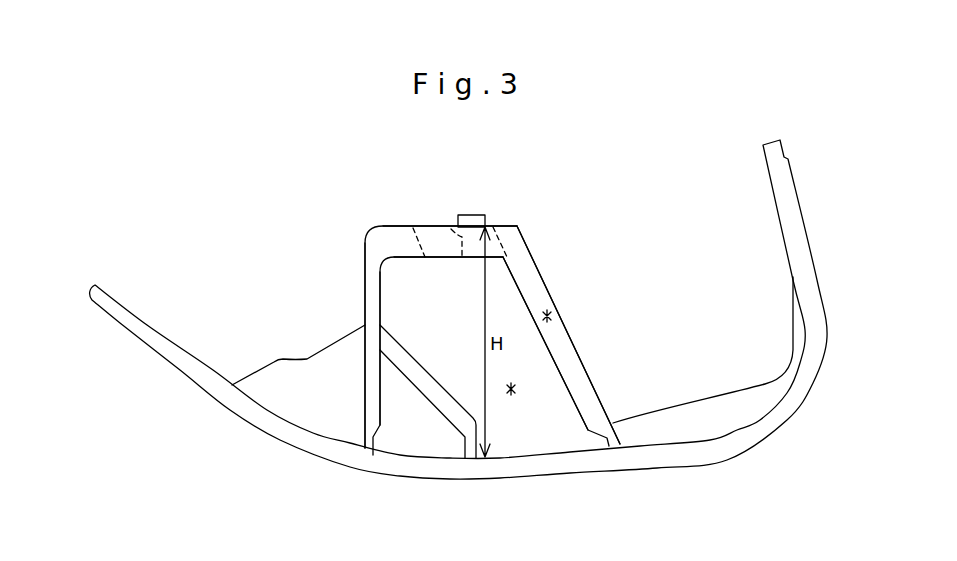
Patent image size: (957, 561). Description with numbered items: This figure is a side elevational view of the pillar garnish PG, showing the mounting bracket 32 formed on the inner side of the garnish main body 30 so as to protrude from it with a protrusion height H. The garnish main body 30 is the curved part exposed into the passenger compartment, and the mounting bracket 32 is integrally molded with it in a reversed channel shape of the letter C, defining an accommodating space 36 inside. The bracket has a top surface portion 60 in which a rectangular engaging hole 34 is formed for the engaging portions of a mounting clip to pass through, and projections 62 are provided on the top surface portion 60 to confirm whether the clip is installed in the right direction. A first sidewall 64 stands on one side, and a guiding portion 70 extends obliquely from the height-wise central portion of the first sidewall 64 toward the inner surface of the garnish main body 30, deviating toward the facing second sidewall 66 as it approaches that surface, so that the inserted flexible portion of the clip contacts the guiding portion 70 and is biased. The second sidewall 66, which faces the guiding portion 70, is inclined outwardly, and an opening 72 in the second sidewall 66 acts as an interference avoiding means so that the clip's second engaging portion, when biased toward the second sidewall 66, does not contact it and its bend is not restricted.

The garnish main body 30 is at (697, 480).
The pillar garnish PG is at (273, 470).
The mounting bracket 32 is at (355, 268).
The engaging hole 34 is at (450, 227).
The accommodating space 36 is at (512, 392).
The top surface portion 60 is at (408, 227).
The projections 62 is at (472, 220).
The first sidewall 64 is at (368, 317).
The second sidewall 66 is at (578, 356).
The guiding portion 70 is at (428, 388).
The opening 72 is at (550, 315).